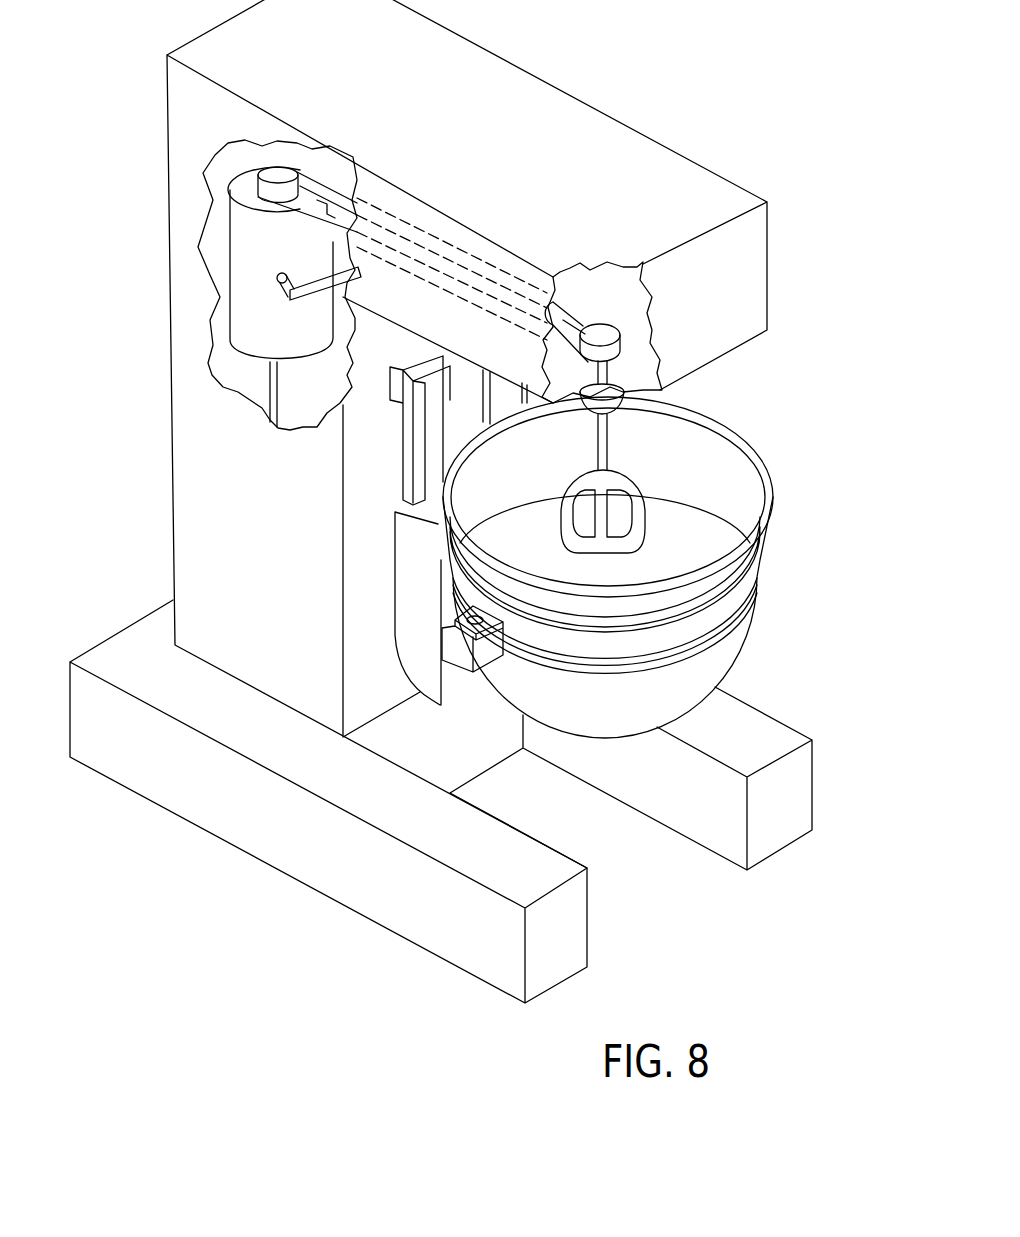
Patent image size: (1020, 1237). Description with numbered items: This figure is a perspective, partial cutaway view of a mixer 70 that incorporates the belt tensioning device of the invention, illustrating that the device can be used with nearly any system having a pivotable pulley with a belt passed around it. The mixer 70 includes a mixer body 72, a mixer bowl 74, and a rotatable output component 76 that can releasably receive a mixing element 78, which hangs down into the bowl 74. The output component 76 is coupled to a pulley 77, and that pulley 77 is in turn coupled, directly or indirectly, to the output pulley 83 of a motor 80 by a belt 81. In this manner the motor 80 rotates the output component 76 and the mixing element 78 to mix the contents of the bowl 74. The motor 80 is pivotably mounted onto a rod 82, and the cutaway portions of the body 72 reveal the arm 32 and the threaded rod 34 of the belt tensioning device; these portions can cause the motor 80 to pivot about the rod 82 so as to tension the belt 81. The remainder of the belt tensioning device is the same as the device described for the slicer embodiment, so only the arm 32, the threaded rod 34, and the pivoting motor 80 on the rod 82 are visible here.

The mixer 70 is at (178, 871).
The mixer body 72 is at (183, 480).
The mixer bowl 74 is at (723, 610).
The rotatable output component 76 is at (617, 403).
The pulley 77 is at (592, 330).
The mixing element 78 is at (628, 483).
The motor 80 is at (310, 350).
The belt 81 is at (547, 347).
The rod 82 is at (270, 167).
The output pulley 83 is at (285, 170).
The arm 32 is at (282, 295).
The threaded rod 34 is at (303, 284).